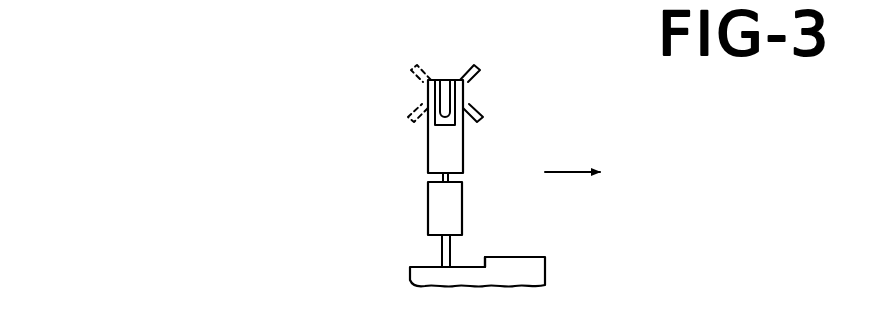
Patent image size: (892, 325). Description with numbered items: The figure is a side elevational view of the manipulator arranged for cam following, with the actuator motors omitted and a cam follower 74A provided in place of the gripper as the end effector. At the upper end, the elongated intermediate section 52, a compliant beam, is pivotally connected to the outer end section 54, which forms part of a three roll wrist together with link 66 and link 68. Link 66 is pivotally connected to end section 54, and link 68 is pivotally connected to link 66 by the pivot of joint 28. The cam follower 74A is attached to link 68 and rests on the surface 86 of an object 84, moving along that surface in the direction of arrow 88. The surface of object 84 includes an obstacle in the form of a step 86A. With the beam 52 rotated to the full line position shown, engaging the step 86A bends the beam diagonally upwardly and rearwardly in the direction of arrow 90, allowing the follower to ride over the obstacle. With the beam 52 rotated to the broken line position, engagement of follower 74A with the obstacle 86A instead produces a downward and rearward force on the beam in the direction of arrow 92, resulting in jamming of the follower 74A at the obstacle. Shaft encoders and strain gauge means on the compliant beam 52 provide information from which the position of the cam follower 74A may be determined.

The joint 28 is at (424, 176).
The elongated intermediate section 52 is at (418, 66).
The end section 54 is at (447, 80).
The link 66 is at (463, 157).
The link 68 is at (428, 207).
The cam follower 74A is at (442, 256).
The object 84 is at (545, 272).
The surface 86 is at (548, 255).
The step 86A is at (478, 263).
The arrow 88 is at (565, 172).
The arrow 90 is at (408, 107).
The arrow 92 is at (410, 88).